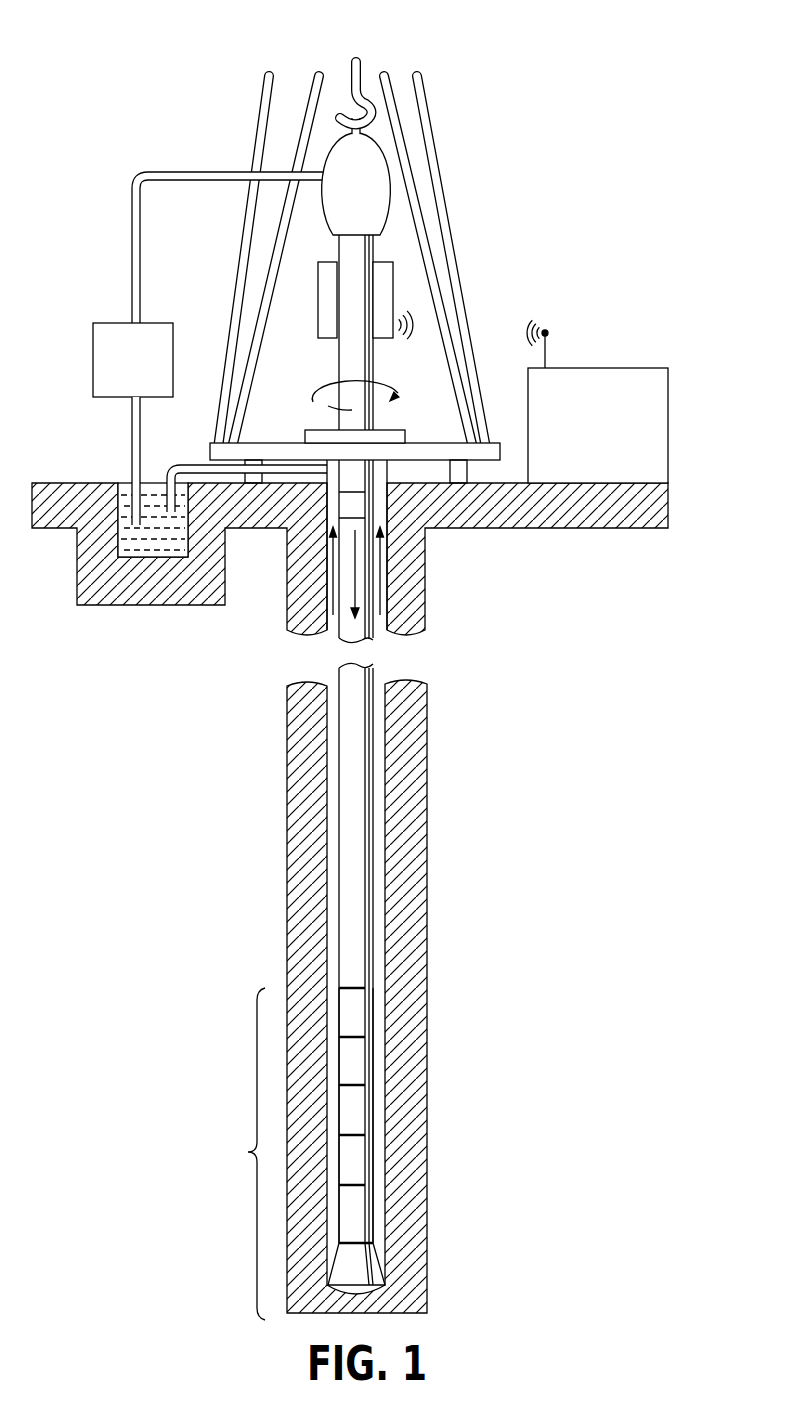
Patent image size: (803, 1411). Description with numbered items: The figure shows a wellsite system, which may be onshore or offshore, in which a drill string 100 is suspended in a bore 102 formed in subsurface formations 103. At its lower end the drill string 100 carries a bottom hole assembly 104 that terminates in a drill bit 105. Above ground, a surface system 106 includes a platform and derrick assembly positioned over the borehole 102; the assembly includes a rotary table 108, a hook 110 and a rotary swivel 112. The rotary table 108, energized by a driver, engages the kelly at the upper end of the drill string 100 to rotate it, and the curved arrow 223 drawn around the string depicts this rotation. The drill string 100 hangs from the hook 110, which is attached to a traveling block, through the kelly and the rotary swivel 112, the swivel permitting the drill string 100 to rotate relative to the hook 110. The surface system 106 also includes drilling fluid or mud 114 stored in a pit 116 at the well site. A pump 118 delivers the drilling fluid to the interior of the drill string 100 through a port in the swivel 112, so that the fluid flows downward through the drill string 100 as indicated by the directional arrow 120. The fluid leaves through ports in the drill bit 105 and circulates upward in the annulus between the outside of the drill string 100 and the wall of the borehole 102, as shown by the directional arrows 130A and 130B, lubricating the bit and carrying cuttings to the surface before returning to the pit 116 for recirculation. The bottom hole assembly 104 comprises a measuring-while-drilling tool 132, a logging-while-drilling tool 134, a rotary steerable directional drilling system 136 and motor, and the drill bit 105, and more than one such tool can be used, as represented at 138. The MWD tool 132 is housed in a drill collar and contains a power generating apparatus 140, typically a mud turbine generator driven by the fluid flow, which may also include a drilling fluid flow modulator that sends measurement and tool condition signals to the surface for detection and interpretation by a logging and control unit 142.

The drill string 100 is at (344, 454).
The bore 102 is at (378, 475).
The subsurface formations 103 is at (412, 742).
The bottom hole assembly 104 is at (236, 1154).
The drill bit 105 is at (358, 1262).
The surface system 106 is at (476, 170).
The rotary table 108 is at (381, 434).
The hook 110 is at (363, 74).
The rotary swivel 112 is at (338, 165).
The drilling fluid 114 is at (118, 472).
The pit 116 is at (152, 554).
The pump 118 is at (93, 335).
The directional arrow 120 is at (361, 580).
The directional arrow 130A is at (333, 578).
The directional arrow 130B is at (381, 556).
The measuring-while-drilling tool 132 is at (358, 1010).
The logging-while-drilling tool 134 is at (358, 1162).
The rotary steerable directional drilling system 136 is at (358, 1208).
The additional LWD or MWD tool 138 is at (358, 1112).
The power generating apparatus 140 is at (358, 1060).
The logging and control unit 142 is at (597, 366).
The drill string rotation 223 is at (327, 398).